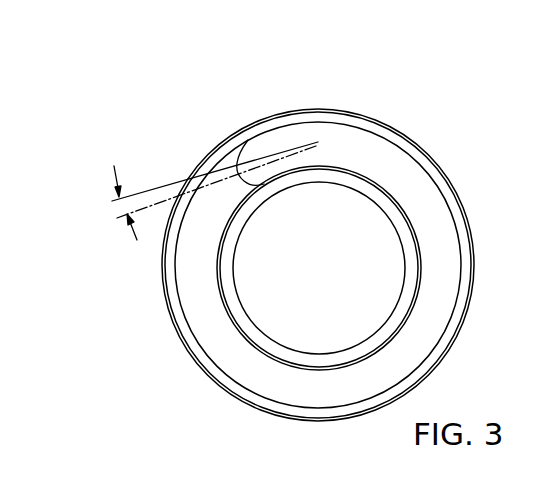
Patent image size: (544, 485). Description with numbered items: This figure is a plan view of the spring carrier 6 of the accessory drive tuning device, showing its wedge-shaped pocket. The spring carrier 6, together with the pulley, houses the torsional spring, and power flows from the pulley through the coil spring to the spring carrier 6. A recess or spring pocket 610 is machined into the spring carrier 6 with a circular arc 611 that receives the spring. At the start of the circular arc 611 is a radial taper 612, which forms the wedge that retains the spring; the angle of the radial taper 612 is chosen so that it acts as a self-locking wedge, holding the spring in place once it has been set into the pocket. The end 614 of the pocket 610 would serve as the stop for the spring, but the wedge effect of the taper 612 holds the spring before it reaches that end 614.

The spring carrier 6 is at (460, 170).
The spring pocket 610 is at (303, 133).
The circular arc 611 is at (393, 135).
The radial taper 612 is at (257, 135).
The end of the pocket 614 is at (237, 158).